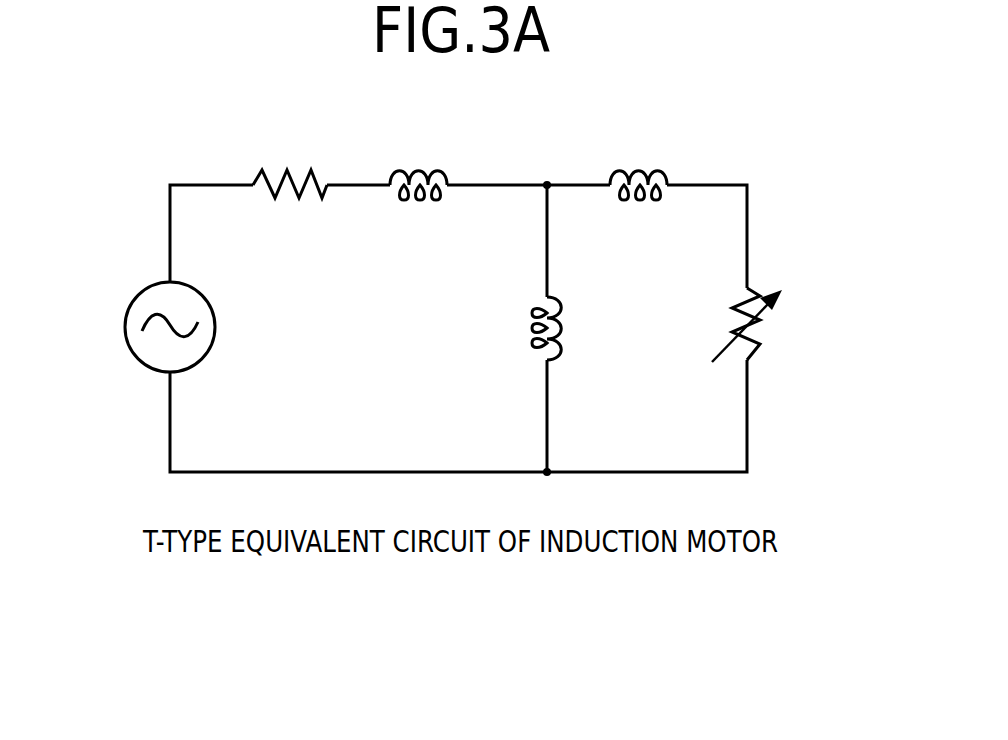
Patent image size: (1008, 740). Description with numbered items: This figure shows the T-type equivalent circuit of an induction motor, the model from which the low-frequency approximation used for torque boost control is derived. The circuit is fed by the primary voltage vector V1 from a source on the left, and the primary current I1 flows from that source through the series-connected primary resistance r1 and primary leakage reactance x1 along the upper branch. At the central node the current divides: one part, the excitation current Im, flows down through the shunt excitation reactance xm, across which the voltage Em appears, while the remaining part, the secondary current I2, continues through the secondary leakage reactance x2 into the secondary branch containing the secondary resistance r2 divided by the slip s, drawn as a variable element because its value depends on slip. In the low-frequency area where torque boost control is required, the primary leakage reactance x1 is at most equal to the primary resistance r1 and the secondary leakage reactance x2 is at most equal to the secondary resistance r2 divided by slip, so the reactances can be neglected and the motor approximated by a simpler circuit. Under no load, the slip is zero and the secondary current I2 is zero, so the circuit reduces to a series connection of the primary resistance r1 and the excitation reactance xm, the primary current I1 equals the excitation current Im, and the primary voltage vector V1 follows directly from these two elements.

The primary voltage vector V1 is at (112, 276).
The primary current I1 is at (218, 162).
The primary resistance r1 is at (290, 165).
The primary leakage reactance x1 is at (418, 165).
The secondary leakage reactance x2 is at (638, 164).
The secondary current I2 is at (763, 182).
The excitation current Im is at (568, 282).
The induced voltage across magnetizing branch Em is at (505, 267).
The excitation reactance xm is at (574, 328).
The secondary resistance r2 is at (833, 327).